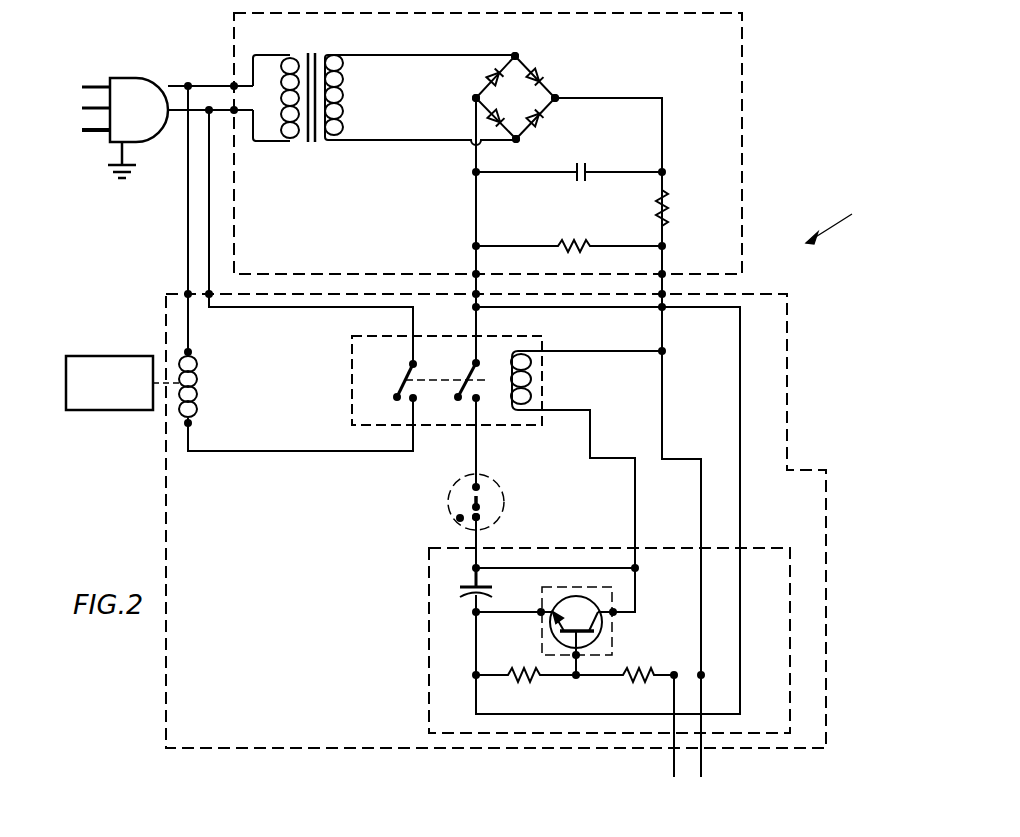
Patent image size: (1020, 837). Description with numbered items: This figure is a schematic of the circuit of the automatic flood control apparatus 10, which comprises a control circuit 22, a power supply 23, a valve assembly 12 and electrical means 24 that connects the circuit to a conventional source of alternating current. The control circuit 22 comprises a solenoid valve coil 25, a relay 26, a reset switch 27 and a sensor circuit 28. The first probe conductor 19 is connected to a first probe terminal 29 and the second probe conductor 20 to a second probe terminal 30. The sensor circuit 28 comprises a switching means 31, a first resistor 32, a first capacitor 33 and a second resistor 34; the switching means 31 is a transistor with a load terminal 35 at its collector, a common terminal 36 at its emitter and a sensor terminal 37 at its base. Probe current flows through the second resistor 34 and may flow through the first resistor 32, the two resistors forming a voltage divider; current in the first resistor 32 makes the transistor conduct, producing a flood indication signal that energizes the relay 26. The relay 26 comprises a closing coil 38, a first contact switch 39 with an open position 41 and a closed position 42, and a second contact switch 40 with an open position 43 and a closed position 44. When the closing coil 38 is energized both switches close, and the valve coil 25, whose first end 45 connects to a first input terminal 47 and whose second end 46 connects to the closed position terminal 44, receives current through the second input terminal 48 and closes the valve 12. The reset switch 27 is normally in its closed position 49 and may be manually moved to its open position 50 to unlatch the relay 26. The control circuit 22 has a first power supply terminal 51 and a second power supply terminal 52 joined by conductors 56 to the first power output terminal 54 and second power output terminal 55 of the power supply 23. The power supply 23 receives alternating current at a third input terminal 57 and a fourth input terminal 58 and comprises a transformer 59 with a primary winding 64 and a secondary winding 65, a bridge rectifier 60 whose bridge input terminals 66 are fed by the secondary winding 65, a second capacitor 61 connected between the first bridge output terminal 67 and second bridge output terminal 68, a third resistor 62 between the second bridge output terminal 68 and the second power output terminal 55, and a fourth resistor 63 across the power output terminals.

The automatic flood control apparatus 10 is at (844, 220).
The valve assembly 12 is at (120, 356).
The first probe conductor 19 is at (701, 770).
The second probe conductor 20 is at (674, 770).
The control circuit 22 is at (826, 470).
The power supply 23 is at (742, 96).
The electrical means 24 is at (168, 84).
The solenoid valve coil 25 is at (198, 385).
The relay 26 is at (542, 425).
The reset switch 27 is at (503, 508).
The sensor circuit 28 is at (790, 548).
The first probe terminal 29 is at (701, 673).
The second probe terminal 30 is at (674, 678).
The switching means 31 is at (603, 628).
The first resistor 32 is at (512, 675).
The first capacitor 33 is at (460, 592).
The second resistor 34 is at (630, 680).
The load terminal 35 is at (613, 612).
The common terminal 36 is at (541, 614).
The sensor terminal 37 is at (578, 658).
The closing coil 38 is at (531, 378).
The first contact switch 39 is at (476, 363).
The second contact switch 40 is at (413, 364).
The open position 41 is at (458, 398).
The closed position 42 is at (476, 400).
The open position 43 is at (397, 395).
The closed position terminal 44 is at (411, 399).
The first end 45 is at (192, 352).
The second end 46 is at (192, 423).
The first input terminal 47 is at (188, 294).
The second input terminal 48 is at (209, 294).
The closed position 49 is at (480, 517).
The open position 50 is at (460, 518).
The first power supply terminal 51 is at (476, 307).
The second power supply terminal 52 is at (662, 307).
The first power output terminal 54 is at (476, 274).
The second power output terminal 55 is at (662, 274).
The conductors 56 is at (476, 294).
The third input terminal 57 is at (234, 86).
The fourth input terminal 58 is at (234, 110).
The transformer 59 is at (384, 82).
The bridge rectifier 60 is at (548, 73).
The second capacitor 61 is at (585, 170).
The third resistor 62 is at (668, 208).
The fourth resistor 63 is at (565, 244).
The primary winding 64 is at (293, 68).
The secondary winding 65 is at (345, 96).
The bridge input terminals 66 is at (515, 56).
The first bridge output terminal 67 is at (476, 98).
The second bridge output terminal 68 is at (556, 98).